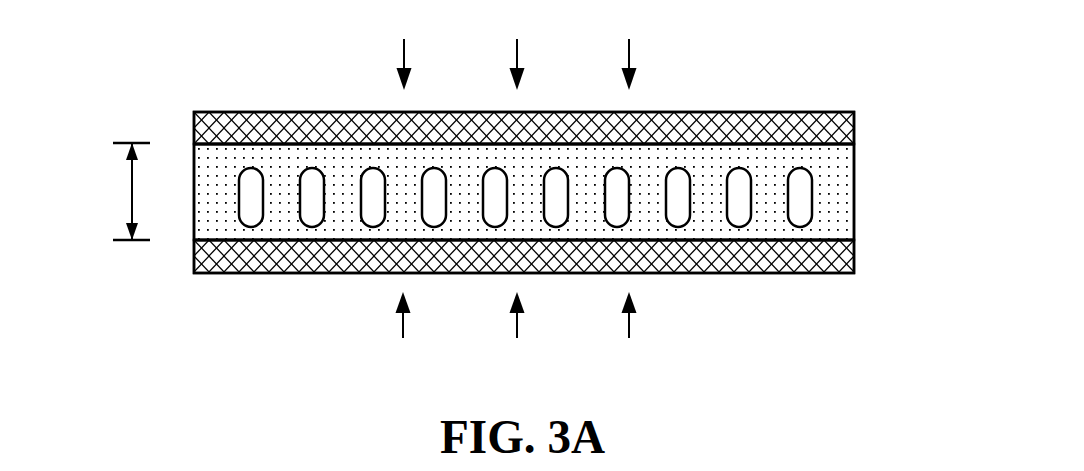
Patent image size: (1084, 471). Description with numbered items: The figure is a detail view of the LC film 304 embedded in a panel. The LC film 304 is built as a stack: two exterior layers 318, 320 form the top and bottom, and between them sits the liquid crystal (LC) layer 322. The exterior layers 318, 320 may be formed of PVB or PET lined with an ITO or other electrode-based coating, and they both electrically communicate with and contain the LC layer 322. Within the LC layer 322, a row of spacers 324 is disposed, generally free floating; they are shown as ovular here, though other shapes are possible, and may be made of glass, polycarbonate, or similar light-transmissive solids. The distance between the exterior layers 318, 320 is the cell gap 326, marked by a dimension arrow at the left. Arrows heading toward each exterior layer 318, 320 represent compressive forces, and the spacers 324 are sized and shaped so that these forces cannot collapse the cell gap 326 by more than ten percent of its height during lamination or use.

The LC film 304 is at (133, 64).
The exterior layer 318 is at (854, 130).
The exterior layer 320 is at (854, 258).
The liquid crystal (LC) layer 322 is at (854, 197).
The spacers 324 is at (727, 167).
The cell gap 326 is at (130, 184).